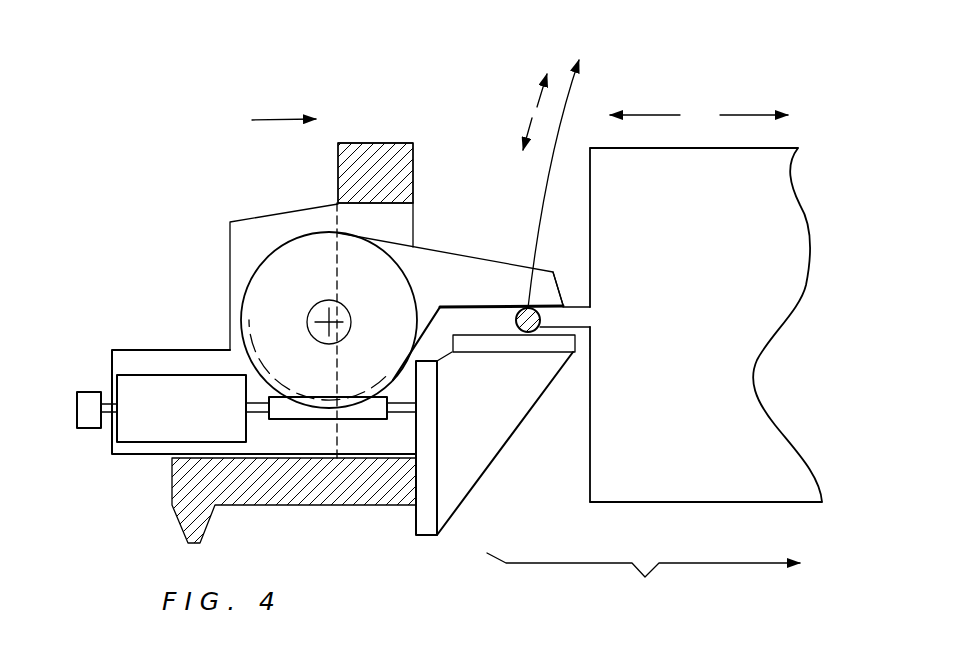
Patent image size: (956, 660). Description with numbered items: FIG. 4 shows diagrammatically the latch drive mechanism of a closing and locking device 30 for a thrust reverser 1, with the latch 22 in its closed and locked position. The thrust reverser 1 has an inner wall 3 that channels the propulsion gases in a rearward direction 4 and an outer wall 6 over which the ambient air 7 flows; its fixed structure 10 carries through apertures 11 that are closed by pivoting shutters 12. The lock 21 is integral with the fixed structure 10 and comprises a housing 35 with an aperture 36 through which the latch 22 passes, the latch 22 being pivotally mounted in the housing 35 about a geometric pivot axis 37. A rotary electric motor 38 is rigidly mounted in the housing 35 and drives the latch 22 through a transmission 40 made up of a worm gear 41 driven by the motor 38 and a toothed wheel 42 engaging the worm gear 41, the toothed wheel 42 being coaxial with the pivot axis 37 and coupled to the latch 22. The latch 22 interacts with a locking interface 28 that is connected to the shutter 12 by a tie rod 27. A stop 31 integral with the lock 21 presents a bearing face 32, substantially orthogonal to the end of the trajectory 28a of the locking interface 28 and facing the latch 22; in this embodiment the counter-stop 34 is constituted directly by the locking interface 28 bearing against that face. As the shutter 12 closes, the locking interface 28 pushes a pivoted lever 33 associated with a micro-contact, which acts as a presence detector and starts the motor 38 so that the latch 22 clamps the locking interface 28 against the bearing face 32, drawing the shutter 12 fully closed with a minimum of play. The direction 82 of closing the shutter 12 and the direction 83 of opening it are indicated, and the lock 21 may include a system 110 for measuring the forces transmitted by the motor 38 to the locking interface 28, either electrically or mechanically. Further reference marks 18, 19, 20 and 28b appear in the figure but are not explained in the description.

The thrust reverser 1 is at (334, 89).
The inner wall 3 is at (757, 503).
The rearward direction 4 is at (745, 115).
The outer wall 6 is at (384, 142).
The ambient air 7 is at (272, 119).
The fixed structure 10 is at (352, 184).
The through apertures 11 is at (643, 584).
The shutter 12 is at (745, 436).
The direction of movement 18 is at (655, 115).
The axis 19 is at (315, 322).
The carriage 20 is at (164, 242).
The lock 21 is at (230, 238).
The latch 22 is at (482, 245).
The tie rod 27 is at (578, 319).
The locking interface 28 is at (528, 320).
The trajectory of the locking interface 28a is at (548, 170).
The roller second position 28b is at (530, 333).
The closing and locking device 30 is at (764, 312).
The stop 31 is at (488, 456).
The bearing face 32 is at (486, 350).
The pivoted lever 33 is at (545, 344).
The counter-stop 34 is at (537, 293).
The housing 35 is at (200, 349).
The aperture 36 is at (423, 222).
The geometric pivot axis 37 is at (330, 322).
The rotary electric motor 38 is at (169, 417).
The transmission 40 is at (366, 435).
The worm gear 41 is at (293, 405).
The toothed wheel 42 is at (310, 262).
The direction of closing the shutter 82 is at (527, 126).
The direction of opening the shutter 83 is at (538, 93).
The force measuring system 110 is at (91, 392).